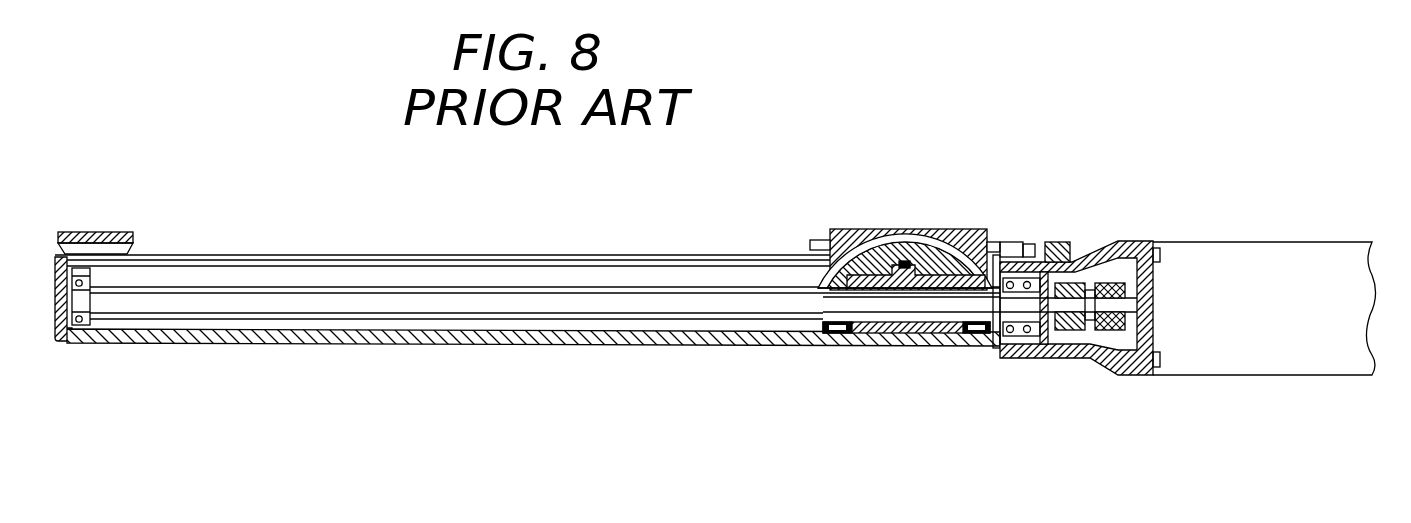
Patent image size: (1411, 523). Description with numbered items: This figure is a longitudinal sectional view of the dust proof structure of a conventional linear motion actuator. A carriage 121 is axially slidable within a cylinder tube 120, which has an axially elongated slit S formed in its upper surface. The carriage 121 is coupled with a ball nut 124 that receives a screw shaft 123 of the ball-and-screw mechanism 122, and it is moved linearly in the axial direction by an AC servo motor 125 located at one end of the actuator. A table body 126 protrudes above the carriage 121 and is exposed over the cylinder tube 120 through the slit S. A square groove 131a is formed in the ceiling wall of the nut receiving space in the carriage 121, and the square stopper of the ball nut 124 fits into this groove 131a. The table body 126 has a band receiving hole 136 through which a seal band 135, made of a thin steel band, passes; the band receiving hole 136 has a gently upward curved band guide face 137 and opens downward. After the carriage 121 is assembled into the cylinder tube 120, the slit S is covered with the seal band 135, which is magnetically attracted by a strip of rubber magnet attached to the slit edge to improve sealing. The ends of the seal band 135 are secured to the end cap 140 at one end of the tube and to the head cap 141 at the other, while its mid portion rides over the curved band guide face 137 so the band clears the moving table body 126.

The end cap 140 is at (57, 262).
The cylinder tube 120 is at (313, 253).
The seal band 135 is at (548, 265).
The slit S is at (605, 255).
The table body 126 is at (832, 230).
The band guide face 137 is at (885, 243).
The band receiving hole 136 is at (950, 247).
The square groove 131a is at (905, 264).
The carriage 121 is at (814, 276).
The ball-and-screw mechanism 122 is at (858, 395).
The ball nut 124 is at (887, 328).
The screw shaft 123 is at (947, 308).
The head cap 141 is at (1027, 362).
The AC servo motor 125 is at (1204, 362).